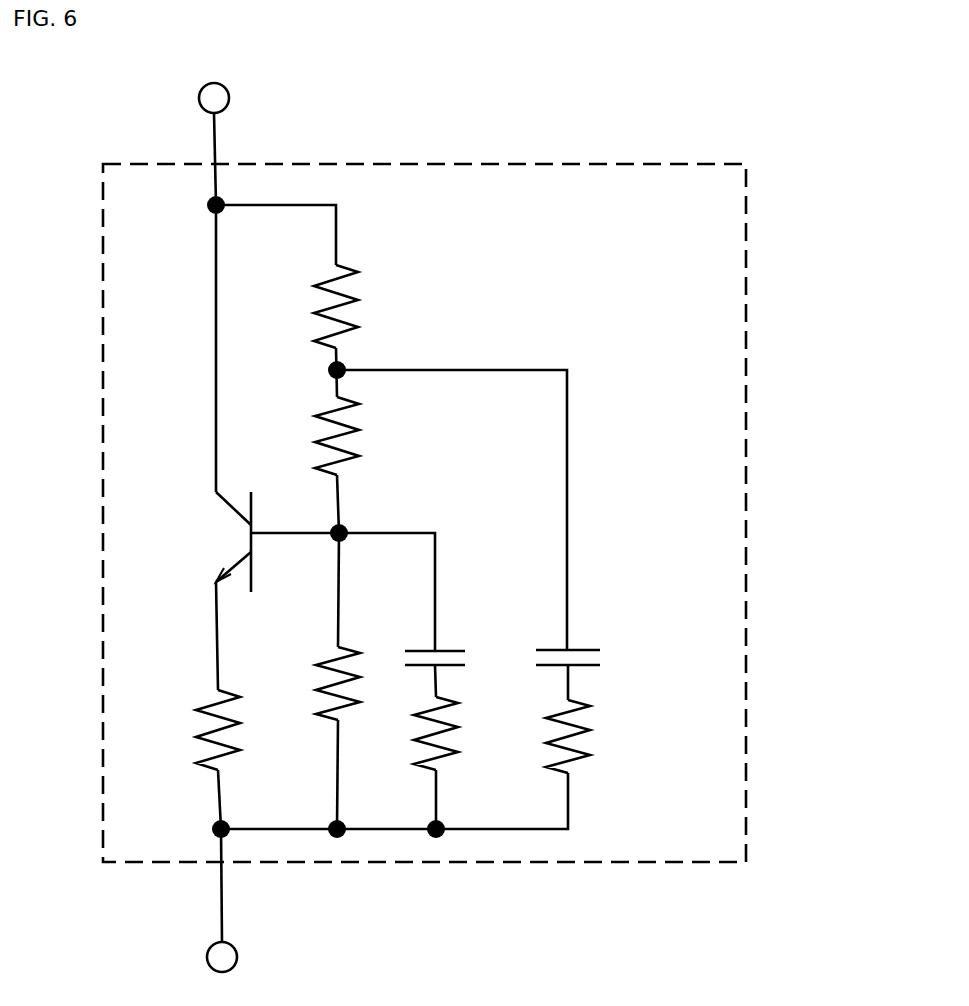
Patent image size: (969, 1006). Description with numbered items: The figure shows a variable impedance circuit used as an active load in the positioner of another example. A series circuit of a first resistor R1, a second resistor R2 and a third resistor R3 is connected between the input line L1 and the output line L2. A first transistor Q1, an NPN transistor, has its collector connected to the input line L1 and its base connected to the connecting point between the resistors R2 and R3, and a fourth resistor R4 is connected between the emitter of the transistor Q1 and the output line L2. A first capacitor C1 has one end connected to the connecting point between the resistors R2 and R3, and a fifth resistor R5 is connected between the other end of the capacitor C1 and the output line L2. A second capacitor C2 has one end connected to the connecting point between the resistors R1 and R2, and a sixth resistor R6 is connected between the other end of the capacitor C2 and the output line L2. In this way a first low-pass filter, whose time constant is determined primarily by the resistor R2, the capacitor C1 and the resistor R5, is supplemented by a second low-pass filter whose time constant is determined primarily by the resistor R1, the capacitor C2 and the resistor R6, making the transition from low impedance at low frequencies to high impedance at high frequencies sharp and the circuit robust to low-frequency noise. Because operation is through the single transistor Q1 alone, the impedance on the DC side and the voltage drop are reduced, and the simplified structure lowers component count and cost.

The input line L1 is at (168, 144).
The output line L2 is at (170, 936).
The first transistor Q1 is at (224, 542).
The first resistor R1 is at (359, 306).
The second resistor R2 is at (359, 436).
The third resistor R3 is at (354, 694).
The fourth resistor R4 is at (242, 730).
The fifth resistor R5 is at (455, 743).
The sixth resistor R6 is at (594, 743).
The first capacitor C1 is at (449, 636).
The second capacitor C2 is at (580, 636).